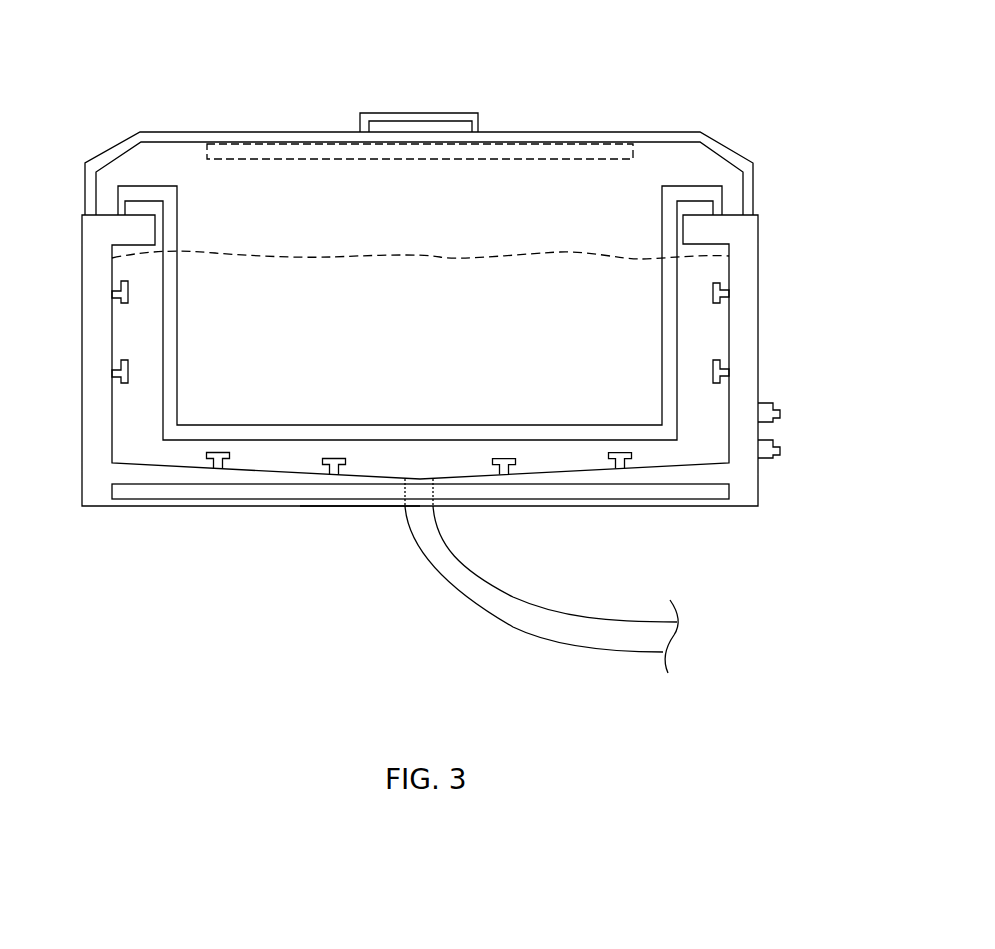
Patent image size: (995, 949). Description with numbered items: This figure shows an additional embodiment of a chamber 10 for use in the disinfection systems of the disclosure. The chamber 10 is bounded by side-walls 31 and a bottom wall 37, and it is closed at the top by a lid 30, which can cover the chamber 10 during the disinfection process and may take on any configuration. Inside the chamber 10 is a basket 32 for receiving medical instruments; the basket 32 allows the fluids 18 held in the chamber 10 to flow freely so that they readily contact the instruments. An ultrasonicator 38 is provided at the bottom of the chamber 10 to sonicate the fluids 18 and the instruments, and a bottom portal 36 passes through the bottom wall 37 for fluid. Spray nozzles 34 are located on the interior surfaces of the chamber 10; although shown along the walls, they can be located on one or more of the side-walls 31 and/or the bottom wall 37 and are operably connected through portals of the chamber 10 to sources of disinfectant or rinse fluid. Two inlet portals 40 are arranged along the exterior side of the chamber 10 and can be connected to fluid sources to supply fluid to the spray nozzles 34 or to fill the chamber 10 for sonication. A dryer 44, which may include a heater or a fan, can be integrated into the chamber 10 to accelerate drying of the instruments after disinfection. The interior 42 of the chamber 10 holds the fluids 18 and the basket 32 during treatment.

The chamber 10 is at (142, 64).
The fluids 18 is at (215, 255).
The lid 30 is at (595, 137).
The side-walls 31 is at (101, 442).
The basket 32 is at (670, 193).
The spray nozzles 34 is at (717, 365).
The bottom portal 36 is at (407, 500).
The bottom wall 37 is at (339, 506).
The ultrasonicator 38 is at (626, 497).
The inlet portals 40 is at (767, 413).
The interior chamber 42 is at (508, 308).
The dryer 44 is at (311, 150).